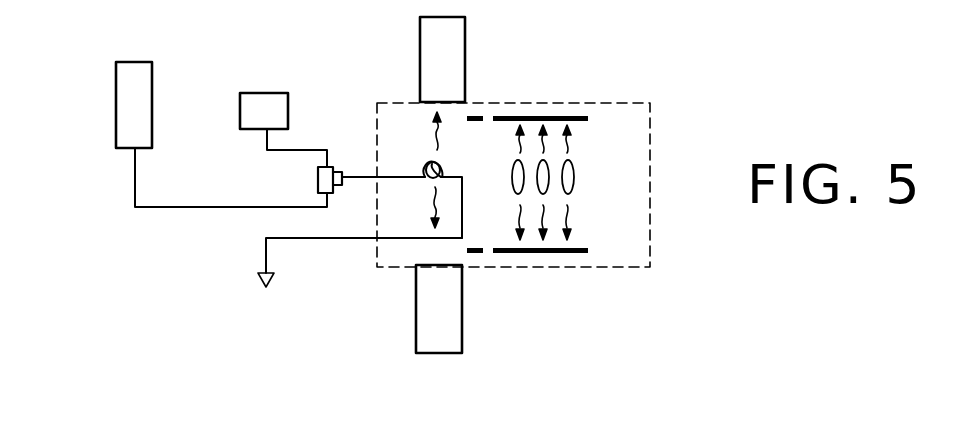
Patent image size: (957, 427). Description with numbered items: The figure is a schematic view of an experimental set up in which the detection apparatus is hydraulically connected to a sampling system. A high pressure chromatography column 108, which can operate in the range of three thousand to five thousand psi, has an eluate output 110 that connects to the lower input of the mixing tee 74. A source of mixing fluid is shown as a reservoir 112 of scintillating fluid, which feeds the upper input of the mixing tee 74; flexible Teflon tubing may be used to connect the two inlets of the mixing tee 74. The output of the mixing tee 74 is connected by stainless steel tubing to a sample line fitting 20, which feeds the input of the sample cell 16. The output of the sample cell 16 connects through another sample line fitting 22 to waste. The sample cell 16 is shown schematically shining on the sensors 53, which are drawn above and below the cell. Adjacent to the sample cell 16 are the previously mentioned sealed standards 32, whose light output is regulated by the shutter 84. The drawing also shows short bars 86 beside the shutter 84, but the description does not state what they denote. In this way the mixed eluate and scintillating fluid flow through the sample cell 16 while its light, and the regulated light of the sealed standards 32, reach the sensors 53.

The sample cell 16 is at (426, 168).
The sample line fitting 20 is at (352, 177).
The sample line fitting 22 is at (293, 238).
The sealed standards 32 is at (576, 178).
The sensors 53 is at (465, 37).
The mixing tee 74 is at (318, 178).
The shutter 84 is at (580, 123).
The gap 86 is at (488, 118).
The high pressure chromatography column 108 is at (122, 78).
The eluate output 110 is at (135, 180).
The reservoir 112 is at (267, 93).